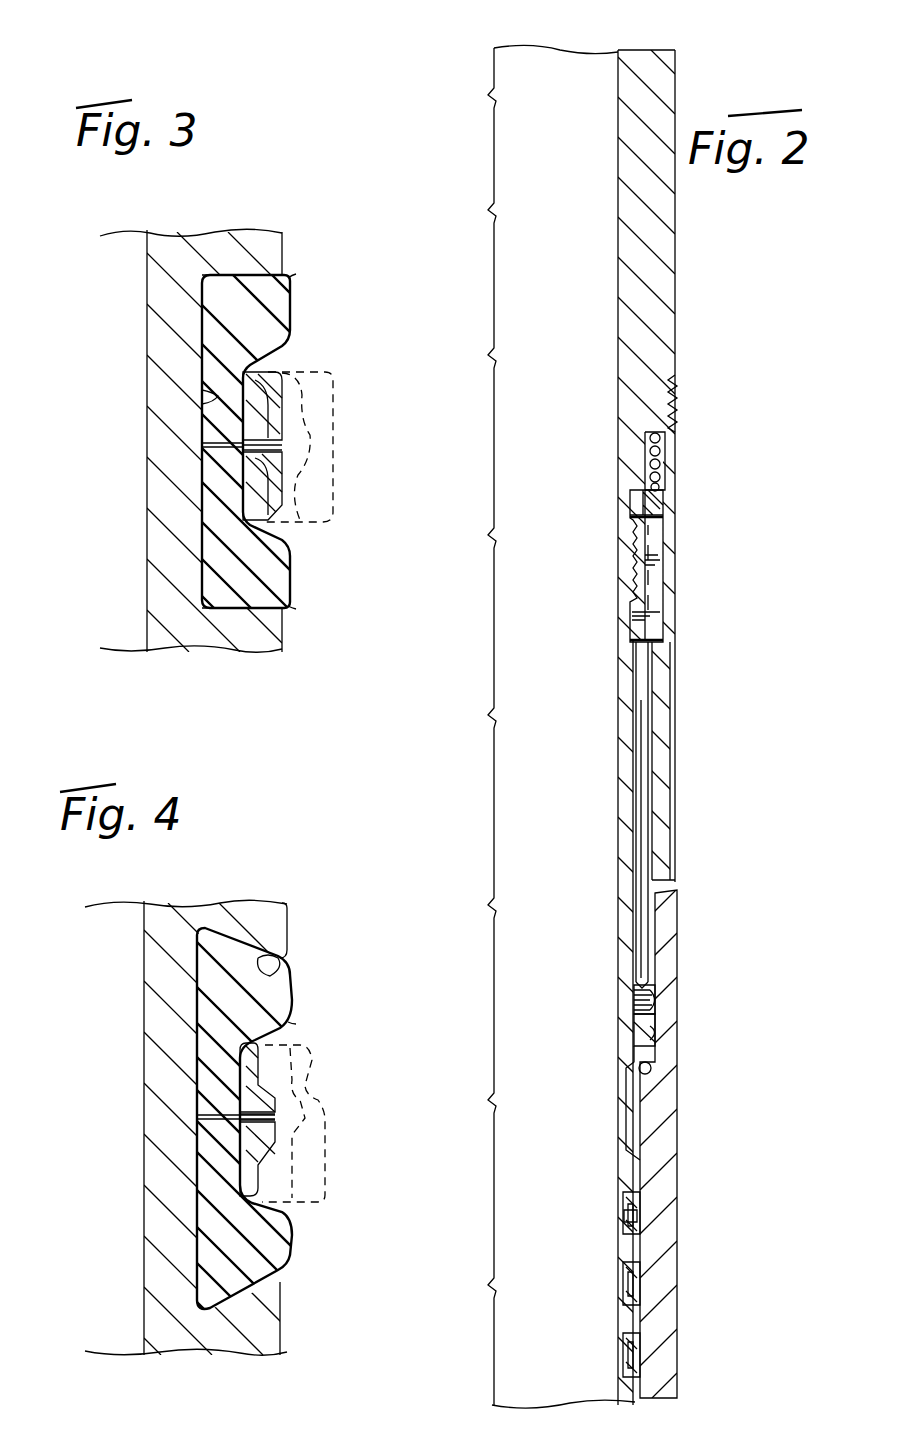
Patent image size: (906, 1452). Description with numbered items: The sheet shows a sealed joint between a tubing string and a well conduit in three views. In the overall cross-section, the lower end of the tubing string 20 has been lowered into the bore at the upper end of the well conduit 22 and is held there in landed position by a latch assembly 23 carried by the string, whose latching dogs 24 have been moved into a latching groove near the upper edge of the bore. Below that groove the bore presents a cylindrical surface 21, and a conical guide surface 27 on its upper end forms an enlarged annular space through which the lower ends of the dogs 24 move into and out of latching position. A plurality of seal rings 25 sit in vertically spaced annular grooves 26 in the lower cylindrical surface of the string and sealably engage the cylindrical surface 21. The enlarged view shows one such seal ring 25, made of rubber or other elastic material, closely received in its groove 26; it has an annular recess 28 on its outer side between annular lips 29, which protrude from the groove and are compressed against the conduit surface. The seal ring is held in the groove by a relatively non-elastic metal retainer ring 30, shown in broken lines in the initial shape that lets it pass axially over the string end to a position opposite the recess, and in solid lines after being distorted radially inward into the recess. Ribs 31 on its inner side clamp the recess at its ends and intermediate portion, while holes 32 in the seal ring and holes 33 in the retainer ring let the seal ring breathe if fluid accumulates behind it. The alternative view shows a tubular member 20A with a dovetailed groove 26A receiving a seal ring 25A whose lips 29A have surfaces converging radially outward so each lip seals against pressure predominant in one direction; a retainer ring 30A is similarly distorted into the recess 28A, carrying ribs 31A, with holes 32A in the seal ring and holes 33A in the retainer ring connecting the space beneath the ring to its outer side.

In FIG. 3, the tubing string 20 is at (284, 646).
In FIG. 2, the tubing string 20 is at (678, 292).
In FIG. 4, the tubular member 20A is at (290, 932).
In FIG. 2, the cylindrical surface 21 is at (626, 1320).
In FIG. 2, the well conduit 22 is at (680, 1158).
In FIG. 2, the latch assembly 23 is at (650, 830).
In FIG. 2, the latching dogs 24 is at (652, 1000).
In FIG. 3, the seal ring 25 is at (294, 291).
In FIG. 2, the seal ring 25 is at (656, 1036).
In FIG. 4, the seal ring 25A is at (294, 1003).
In FIG. 3, the annular groove 26 is at (212, 400).
In FIG. 2, the annular groove 26 is at (640, 1220).
In FIG. 4, the dovetailed groove 26A is at (288, 975).
In FIG. 2, the conical guide surface 27 is at (650, 1070).
In FIG. 3, the annular recess 28 is at (284, 472).
In FIG. 4, the annular recess 28A is at (245, 1102).
In FIG. 3, the annular lips 29 is at (294, 277).
In FIG. 4, the lips 29A is at (294, 1022).
In FIG. 3, the retainer ring 30 is at (336, 390).
In FIG. 4, the retainer ring 30A is at (278, 1082).
In FIG. 3, the ribs 31 is at (247, 516).
In FIG. 4, the ribs 31A is at (242, 1072).
In FIG. 3, the holes 32 is at (214, 447).
In FIG. 4, the holes 32A is at (240, 1126).
In FIG. 3, the holes 33 is at (284, 453).
In FIG. 4, the holes 33A is at (276, 1122).